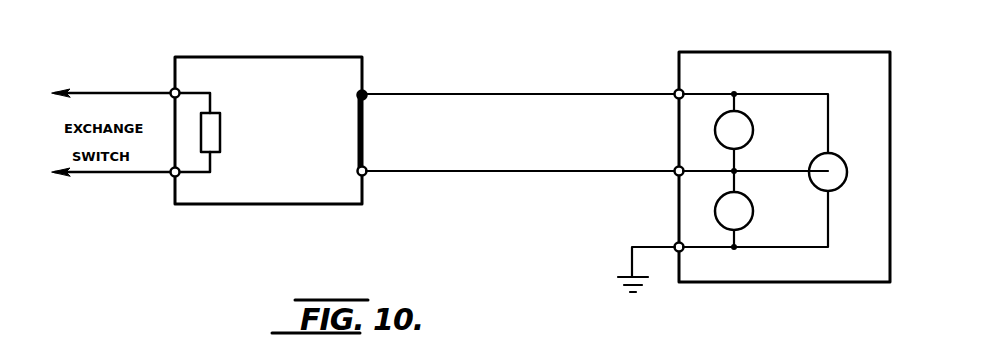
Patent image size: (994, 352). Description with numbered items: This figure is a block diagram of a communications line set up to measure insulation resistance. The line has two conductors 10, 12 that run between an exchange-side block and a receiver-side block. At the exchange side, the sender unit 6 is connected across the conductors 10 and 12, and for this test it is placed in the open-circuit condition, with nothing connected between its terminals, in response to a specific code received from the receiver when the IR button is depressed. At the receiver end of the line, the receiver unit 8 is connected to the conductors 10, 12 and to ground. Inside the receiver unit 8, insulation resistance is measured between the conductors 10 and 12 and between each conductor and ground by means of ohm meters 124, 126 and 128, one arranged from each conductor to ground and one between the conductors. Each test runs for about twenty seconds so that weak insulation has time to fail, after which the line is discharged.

The sender unit 6 is at (366, 57).
The receiver unit 8 is at (679, 55).
The conductor 10 is at (468, 93).
The conductor 12 is at (435, 172).
The ohm meter 124 is at (713, 130).
The ohm meter 126 is at (714, 211).
The ohm meter 128 is at (838, 154).